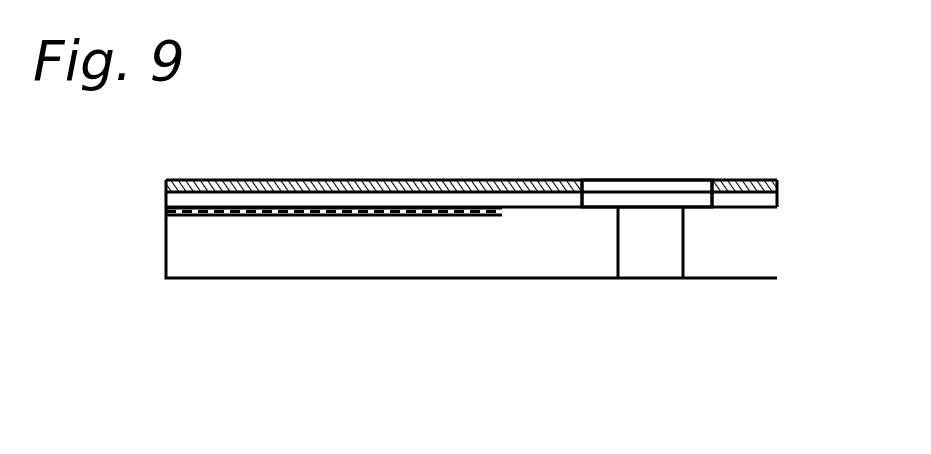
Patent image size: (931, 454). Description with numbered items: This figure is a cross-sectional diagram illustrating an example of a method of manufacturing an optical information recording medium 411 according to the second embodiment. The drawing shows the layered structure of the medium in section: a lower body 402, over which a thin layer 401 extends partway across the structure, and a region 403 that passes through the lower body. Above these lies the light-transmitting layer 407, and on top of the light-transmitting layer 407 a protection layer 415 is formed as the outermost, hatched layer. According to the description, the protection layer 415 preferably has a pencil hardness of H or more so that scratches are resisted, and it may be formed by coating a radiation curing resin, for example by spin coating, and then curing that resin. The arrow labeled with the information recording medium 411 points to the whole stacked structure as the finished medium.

The wiring layer 401 is at (313, 215).
The substrate 402 is at (265, 253).
The through electrode 403 is at (652, 262).
The light-transmitting layer 407 is at (243, 200).
The information recording medium 411 is at (683, 146).
The protection layer 415 is at (480, 180).